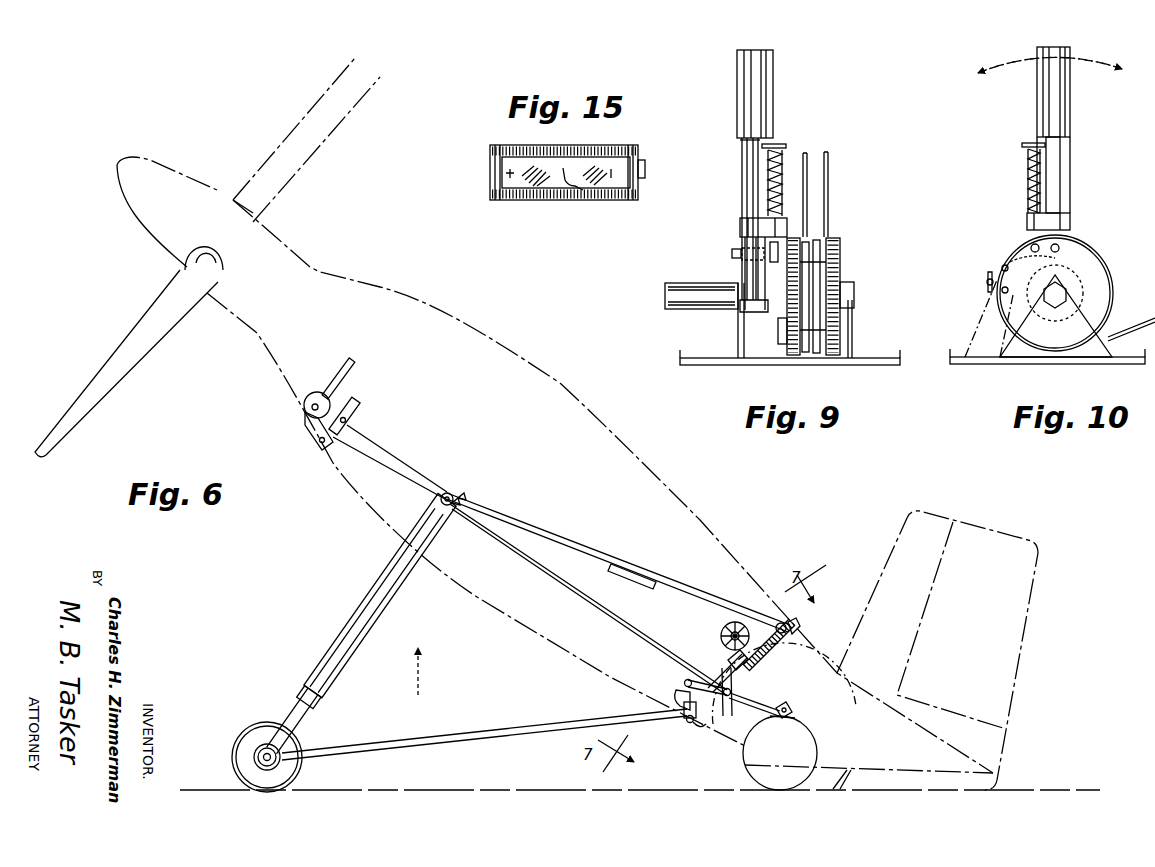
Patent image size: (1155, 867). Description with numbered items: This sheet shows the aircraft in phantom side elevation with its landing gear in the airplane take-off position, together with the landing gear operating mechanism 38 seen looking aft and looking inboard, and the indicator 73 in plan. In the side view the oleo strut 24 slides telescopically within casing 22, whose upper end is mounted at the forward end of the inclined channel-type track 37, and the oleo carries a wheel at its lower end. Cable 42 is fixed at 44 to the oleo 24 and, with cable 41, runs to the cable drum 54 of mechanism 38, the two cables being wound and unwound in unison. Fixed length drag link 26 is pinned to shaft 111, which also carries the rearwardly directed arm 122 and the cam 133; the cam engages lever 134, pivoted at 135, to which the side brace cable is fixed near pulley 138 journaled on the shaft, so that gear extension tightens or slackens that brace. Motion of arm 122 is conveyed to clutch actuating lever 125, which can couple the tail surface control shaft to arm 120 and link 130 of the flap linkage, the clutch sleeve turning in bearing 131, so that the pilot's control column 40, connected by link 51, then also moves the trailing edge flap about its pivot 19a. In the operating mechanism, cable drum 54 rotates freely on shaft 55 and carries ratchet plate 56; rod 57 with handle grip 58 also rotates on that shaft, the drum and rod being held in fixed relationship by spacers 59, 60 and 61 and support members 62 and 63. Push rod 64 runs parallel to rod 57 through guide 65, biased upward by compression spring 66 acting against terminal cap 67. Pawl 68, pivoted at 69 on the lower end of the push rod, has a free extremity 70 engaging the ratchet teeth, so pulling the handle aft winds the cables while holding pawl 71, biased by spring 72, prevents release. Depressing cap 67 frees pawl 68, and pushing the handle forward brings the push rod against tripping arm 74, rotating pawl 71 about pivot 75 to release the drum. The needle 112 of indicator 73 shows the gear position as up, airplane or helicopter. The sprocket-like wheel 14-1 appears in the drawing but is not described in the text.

In FIG. 6, the landing gear operating mechanism 38 is at (322, 390).
In FIG. 9, the landing gear operating mechanism 38 is at (736, 165).
In FIG. 6, the control column 40 is at (358, 402).
In FIG. 6, the cable 42 is at (357, 606).
In FIG. 9, the cable 42 is at (829, 168).
In FIG. 6, the casing 22 is at (381, 623).
In FIG. 6, the cable attachment point 44 is at (293, 709).
In FIG. 6, the oleo strut 24 is at (313, 704).
In FIG. 6, the drag link 26 is at (490, 728).
In FIG. 6, the link 51 is at (561, 588).
In FIG. 6, the track 37 is at (626, 573).
In FIG. 6, the sprocket wheel 14-1 is at (719, 635).
In FIG. 6, the clutch actuating lever 125 is at (727, 667).
In FIG. 6, the arm 122 is at (684, 680).
In FIG. 6, the lever 134 is at (672, 696).
In FIG. 6, the cam 133 is at (684, 708).
In FIG. 6, the shaft 111 is at (686, 724).
In FIG. 6, the pulley 138 is at (697, 728).
In FIG. 6, the pivot 135 is at (713, 697).
In FIG. 6, the arm 120 is at (738, 680).
In FIG. 6, the link 130 is at (755, 708).
In FIG. 6, the flap pivot 19a is at (786, 704).
In FIG. 6, the bearing 131 is at (792, 715).
In FIG. 15, the indicator 73 is at (488, 159).
In FIG. 9, the indicator 73 is at (665, 296).
In FIG. 15, the needle 112 is at (578, 191).
In FIG. 9, the handle grip 58 is at (775, 78).
In FIG. 9, the rod 57 is at (742, 183).
In FIG. 9, the terminal cap 67 is at (784, 143).
In FIG. 10, the terminal cap 67 is at (1026, 143).
In FIG. 9, the compression spring 66 is at (782, 165).
In FIG. 10, the compression spring 66 is at (1030, 166).
In FIG. 10, the push rod 64 is at (1034, 178).
In FIG. 9, the cable 41 is at (807, 160).
In FIG. 9, the guide 65 is at (740, 229).
In FIG. 10, the guide 65 is at (1072, 216).
In FIG. 9, the cable drum 54 is at (838, 238).
In FIG. 9, the spacer 61 is at (847, 282).
In FIG. 9, the support member 62 is at (737, 335).
In FIG. 9, the shaft 55 is at (748, 310).
In FIG. 9, the spacer 60 is at (753, 294).
In FIG. 9, the spacer 59 is at (783, 333).
In FIG. 9, the support member 63 is at (851, 342).
In FIG. 10, the pawl free extremity 70 is at (1068, 262).
In FIG. 10, the ratchet plate 56 is at (1063, 325).
In FIG. 10, the pawl 68 is at (1042, 248).
In FIG. 10, the pawl pivot 69 is at (1060, 249).
In FIG. 10, the tripping arm 74 is at (1005, 264).
In FIG. 10, the holding pawl 71 is at (1024, 280).
In FIG. 10, the spring 72 is at (987, 280).
In FIG. 10, the pawl pivot 75 is at (1002, 293).